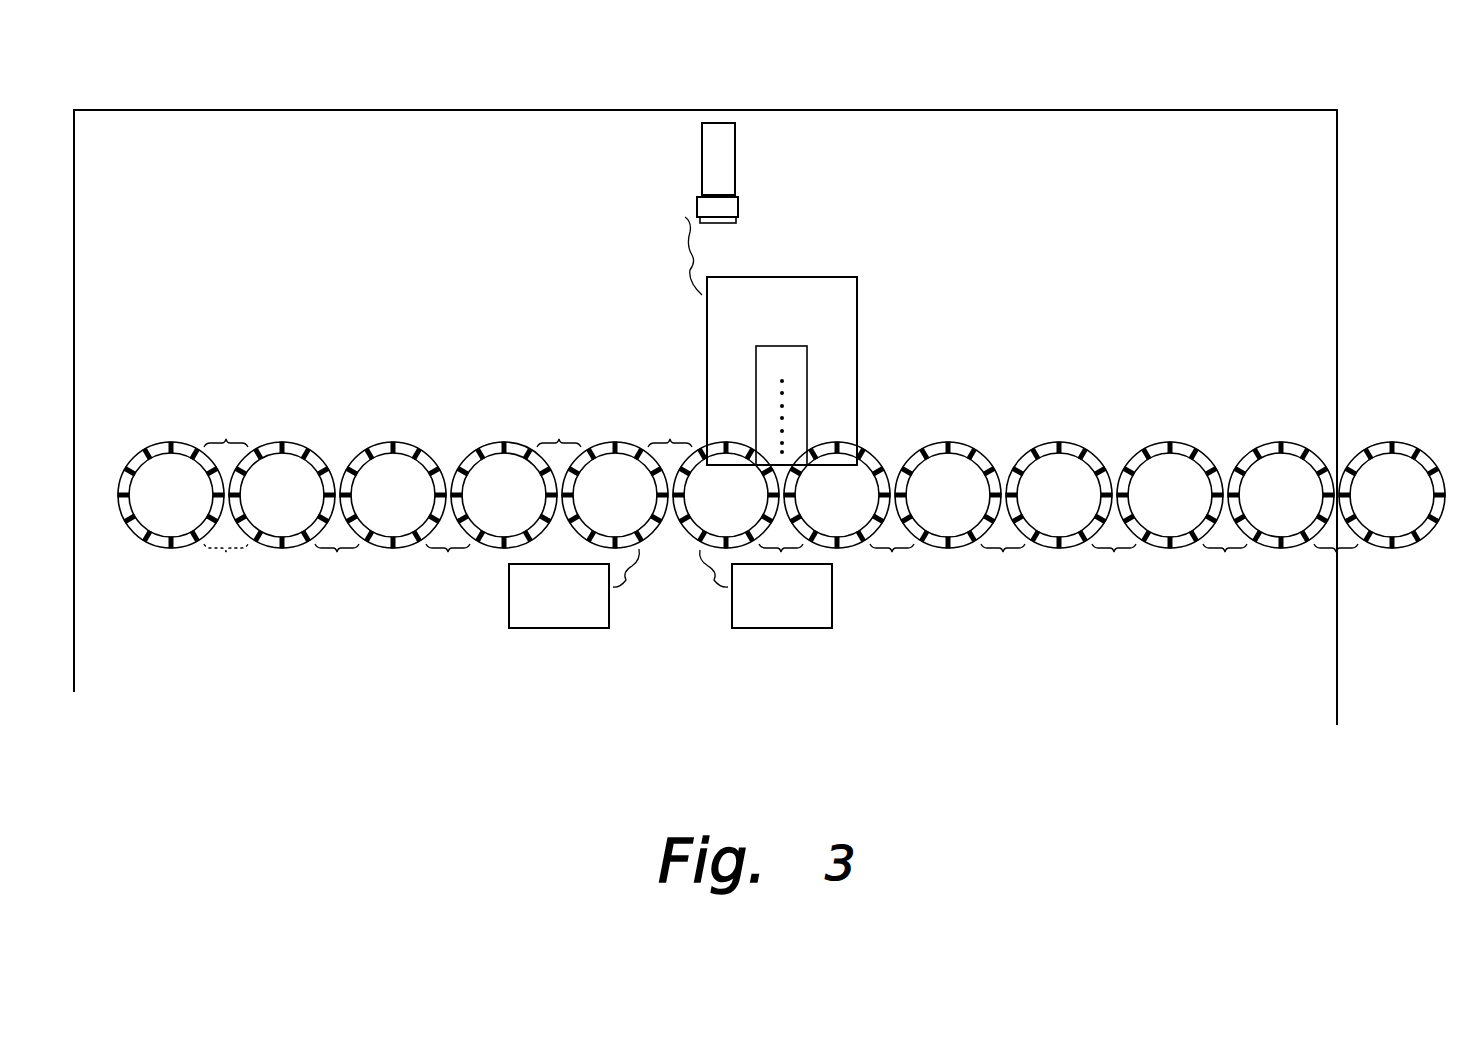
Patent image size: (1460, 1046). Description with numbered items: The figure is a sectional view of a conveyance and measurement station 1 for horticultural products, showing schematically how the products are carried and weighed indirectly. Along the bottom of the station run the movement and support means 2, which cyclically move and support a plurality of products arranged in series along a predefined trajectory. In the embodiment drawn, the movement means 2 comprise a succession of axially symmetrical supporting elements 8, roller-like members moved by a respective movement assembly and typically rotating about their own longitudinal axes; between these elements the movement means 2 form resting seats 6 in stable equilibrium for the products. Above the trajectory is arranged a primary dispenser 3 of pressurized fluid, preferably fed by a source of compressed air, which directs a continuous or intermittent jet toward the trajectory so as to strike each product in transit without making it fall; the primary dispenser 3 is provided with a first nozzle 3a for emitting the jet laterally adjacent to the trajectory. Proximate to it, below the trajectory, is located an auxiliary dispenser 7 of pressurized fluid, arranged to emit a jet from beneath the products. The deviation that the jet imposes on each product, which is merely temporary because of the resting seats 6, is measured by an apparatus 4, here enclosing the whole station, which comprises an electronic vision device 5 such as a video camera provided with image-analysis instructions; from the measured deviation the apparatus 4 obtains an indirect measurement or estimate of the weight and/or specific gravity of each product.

The conveyance and measurement station 1 is at (362, 632).
The movement and support means 2 is at (248, 552).
The primary dispenser 3 is at (769, 266).
The first nozzle 3a is at (782, 406).
The measuring apparatus 4 is at (340, 108).
The electronic vision device 5 is at (688, 172).
The resting seats 6 is at (448, 450).
The auxiliary dispenser 7 is at (550, 633).
The axially symmetrical supporting elements 8 is at (380, 450).